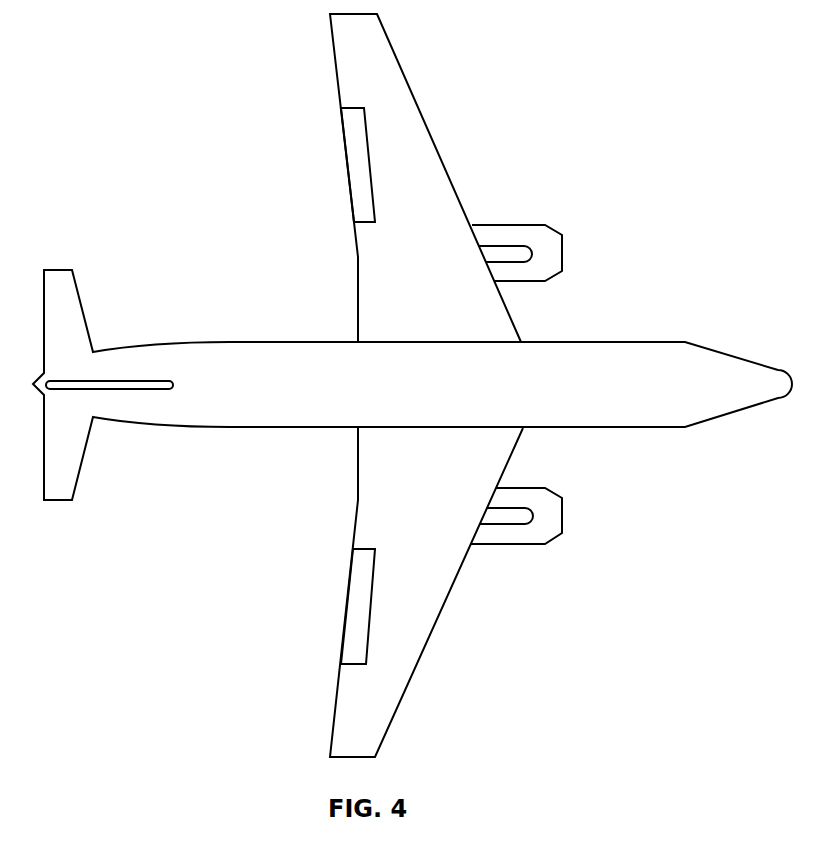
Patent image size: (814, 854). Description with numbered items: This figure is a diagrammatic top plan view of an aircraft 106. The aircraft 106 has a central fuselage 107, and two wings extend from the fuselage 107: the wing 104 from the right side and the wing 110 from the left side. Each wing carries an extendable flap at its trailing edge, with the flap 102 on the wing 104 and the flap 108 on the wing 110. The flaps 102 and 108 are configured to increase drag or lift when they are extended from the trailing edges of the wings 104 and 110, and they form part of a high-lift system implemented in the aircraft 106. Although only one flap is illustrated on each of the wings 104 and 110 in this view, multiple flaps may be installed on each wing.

The aircraft 106 is at (412, 385).
The fuselage 107 is at (248, 428).
The wing 110 is at (394, 178).
The extendable flap 108 is at (358, 163).
The wing 104 is at (390, 592).
The extendable flap 102 is at (348, 598).